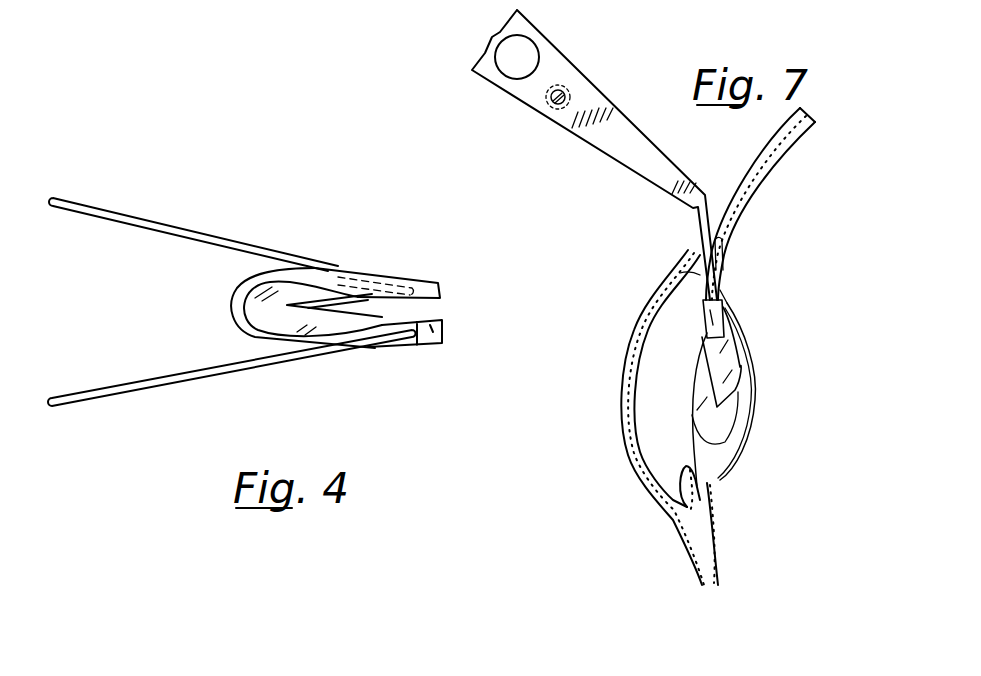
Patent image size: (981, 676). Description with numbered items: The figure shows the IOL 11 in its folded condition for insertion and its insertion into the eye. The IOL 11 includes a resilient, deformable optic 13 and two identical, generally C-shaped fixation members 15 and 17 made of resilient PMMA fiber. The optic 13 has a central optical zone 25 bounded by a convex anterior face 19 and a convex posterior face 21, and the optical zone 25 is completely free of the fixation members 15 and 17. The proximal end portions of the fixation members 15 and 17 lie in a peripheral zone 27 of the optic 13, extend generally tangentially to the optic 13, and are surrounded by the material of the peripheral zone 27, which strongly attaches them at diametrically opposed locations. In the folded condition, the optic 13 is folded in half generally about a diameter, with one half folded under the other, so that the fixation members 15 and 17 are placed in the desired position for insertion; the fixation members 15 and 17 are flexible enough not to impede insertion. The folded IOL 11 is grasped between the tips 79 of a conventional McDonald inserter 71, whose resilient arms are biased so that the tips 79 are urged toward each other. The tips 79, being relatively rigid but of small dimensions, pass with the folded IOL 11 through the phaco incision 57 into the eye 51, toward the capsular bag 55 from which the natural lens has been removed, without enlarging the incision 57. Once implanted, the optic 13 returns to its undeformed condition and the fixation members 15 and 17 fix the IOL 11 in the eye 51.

In FIG. 4, the IOL 11 is at (332, 300).
In FIG. 7, the IOL 11 is at (745, 344).
In FIG. 4, the optic 13 is at (400, 270).
In FIG. 4, the fixation member 15 is at (158, 226).
In FIG. 4, the fixation member 17 is at (130, 392).
In FIG. 4, the anterior face 19 is at (236, 298).
In FIG. 4, the posterior face 21 is at (350, 337).
In FIG. 4, the optical zone 25 is at (263, 309).
In FIG. 4, the peripheral zone 27 is at (443, 321).
In FIG. 7, the human eye 51 is at (627, 457).
In FIG. 7, the capsular bag 55 is at (745, 441).
In FIG. 7, the phaco incision 57 is at (693, 258).
In FIG. 7, the McDonald inserter 71 is at (602, 90).
In FIG. 7, the tips 79 is at (730, 325).